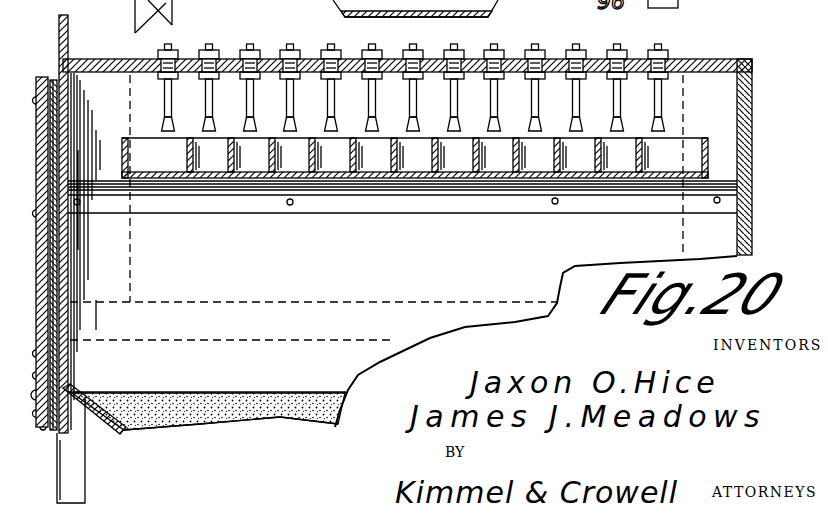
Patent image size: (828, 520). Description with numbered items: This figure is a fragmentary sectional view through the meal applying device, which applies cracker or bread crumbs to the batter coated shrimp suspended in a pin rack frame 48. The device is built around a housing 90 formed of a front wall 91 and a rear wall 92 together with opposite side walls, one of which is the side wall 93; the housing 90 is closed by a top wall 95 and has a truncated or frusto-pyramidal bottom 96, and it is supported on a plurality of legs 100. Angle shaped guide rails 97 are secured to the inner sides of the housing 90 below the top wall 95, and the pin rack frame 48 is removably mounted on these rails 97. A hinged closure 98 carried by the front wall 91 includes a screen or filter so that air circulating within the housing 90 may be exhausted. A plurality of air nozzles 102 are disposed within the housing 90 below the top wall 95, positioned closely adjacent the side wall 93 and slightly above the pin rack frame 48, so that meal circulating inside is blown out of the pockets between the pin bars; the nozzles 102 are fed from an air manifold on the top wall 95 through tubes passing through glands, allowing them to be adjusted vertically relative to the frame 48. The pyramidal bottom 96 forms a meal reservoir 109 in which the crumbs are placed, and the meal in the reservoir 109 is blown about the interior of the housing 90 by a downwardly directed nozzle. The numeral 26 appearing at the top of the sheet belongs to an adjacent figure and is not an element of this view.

The fragment of adjacent figure 26 is at (177, 16).
The housing 90 is at (437, 135).
The front wall 91 is at (63, 68).
The rear wall 92 is at (760, 193).
The side wall 93 is at (415, 200).
The top wall 95 is at (717, 62).
The frusto-pyramidal bottom 96 is at (107, 422).
The angle shaped guide rails 97 is at (525, 203).
The hinged closure 98 is at (38, 127).
The legs 100 is at (77, 477).
The air nozzles 102 is at (665, 124).
The meal reservoir 109 is at (173, 412).
The pin rack frame 48 is at (462, 181).